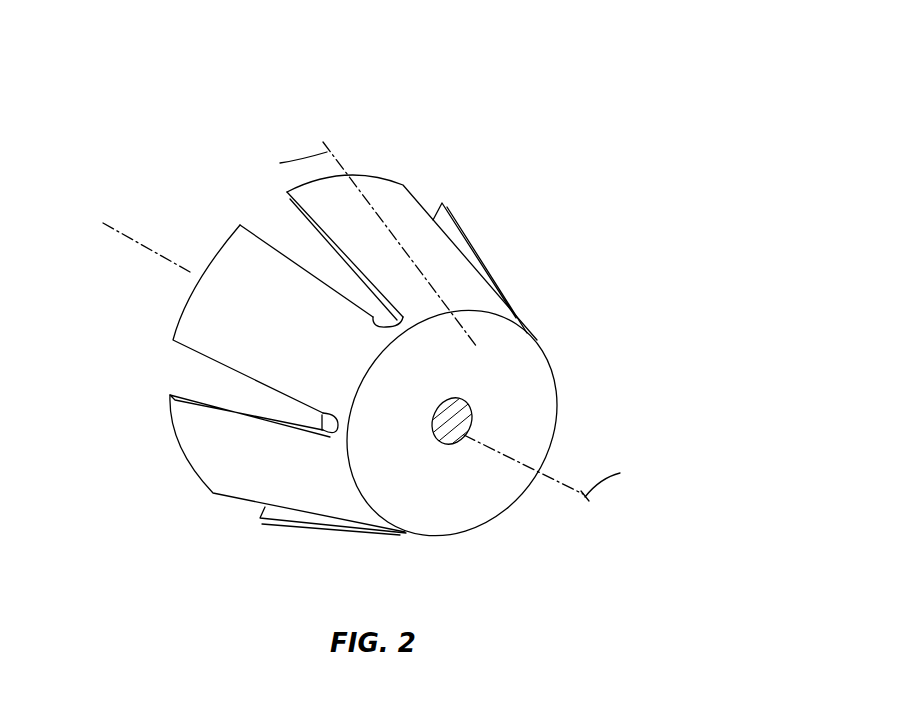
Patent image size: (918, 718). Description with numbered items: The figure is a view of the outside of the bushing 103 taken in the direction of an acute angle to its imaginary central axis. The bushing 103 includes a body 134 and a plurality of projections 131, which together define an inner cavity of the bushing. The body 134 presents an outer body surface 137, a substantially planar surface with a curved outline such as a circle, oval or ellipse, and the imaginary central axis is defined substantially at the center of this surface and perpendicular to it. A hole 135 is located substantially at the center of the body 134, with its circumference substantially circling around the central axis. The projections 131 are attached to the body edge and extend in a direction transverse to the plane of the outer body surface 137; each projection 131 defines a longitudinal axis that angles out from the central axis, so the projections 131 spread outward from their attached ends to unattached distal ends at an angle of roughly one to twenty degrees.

The bushing 103 is at (448, 85).
The projections 131 is at (400, 183).
The body 134 is at (527, 360).
The hole 135 is at (457, 443).
The outer body surface 137 is at (473, 423).